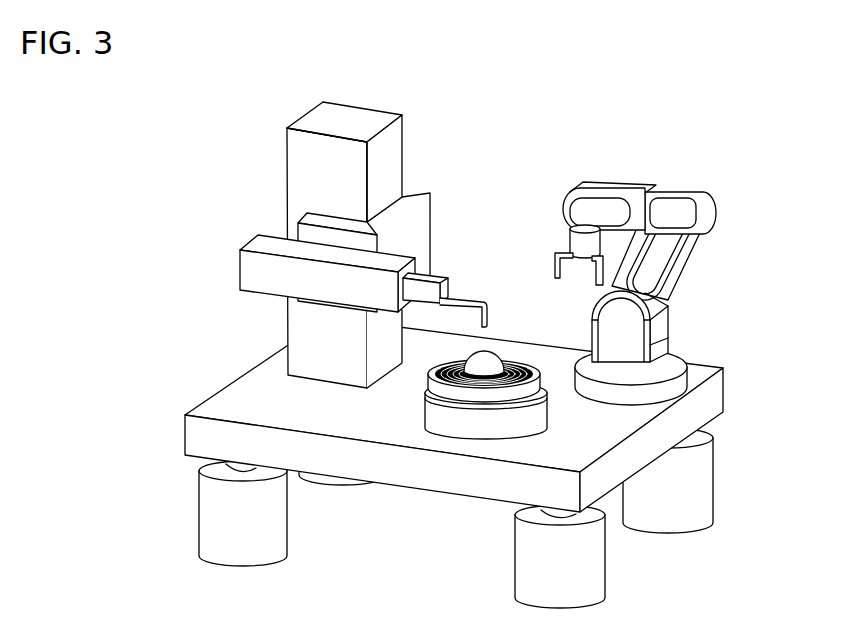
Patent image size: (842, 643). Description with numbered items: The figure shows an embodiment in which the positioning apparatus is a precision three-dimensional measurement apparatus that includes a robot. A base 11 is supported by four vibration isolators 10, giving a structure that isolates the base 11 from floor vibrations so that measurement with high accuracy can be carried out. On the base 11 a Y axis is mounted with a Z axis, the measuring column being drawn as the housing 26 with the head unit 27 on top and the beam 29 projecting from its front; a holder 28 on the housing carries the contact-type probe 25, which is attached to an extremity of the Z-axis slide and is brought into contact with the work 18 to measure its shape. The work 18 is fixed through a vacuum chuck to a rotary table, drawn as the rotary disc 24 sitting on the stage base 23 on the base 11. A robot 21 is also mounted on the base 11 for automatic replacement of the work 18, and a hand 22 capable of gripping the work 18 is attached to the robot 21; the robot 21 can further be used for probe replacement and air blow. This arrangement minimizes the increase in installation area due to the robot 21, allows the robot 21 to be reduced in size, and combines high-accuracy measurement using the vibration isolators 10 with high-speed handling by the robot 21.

The vibration isolators 10 is at (597, 568).
The base 11 is at (717, 391).
The work 18 is at (487, 343).
The robot 21 is at (690, 262).
The hand 22 is at (567, 248).
The stage base 23 is at (432, 425).
The rotary table 24 is at (482, 395).
The probe 25 is at (480, 297).
The housing 26 is at (412, 195).
The head unit 27 is at (398, 128).
The holder 28 is at (437, 272).
The beam 29 is at (245, 267).